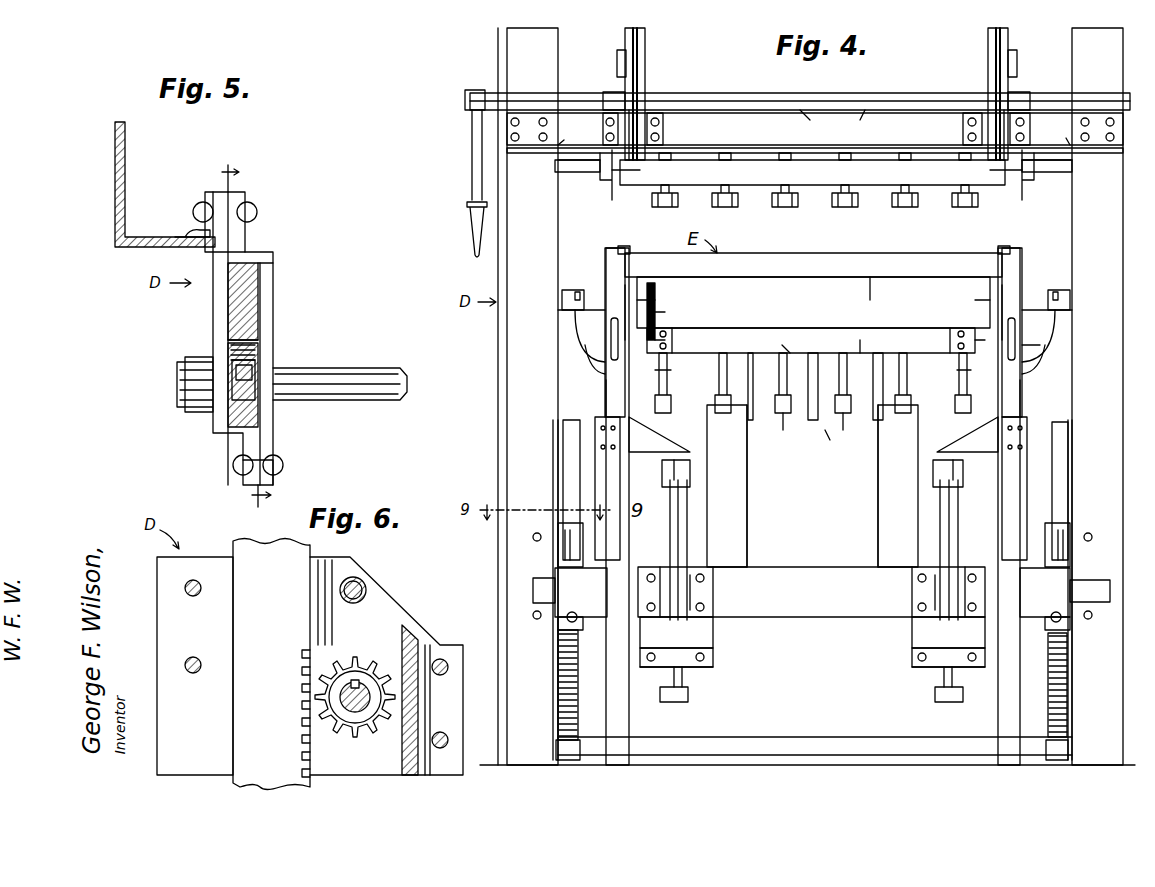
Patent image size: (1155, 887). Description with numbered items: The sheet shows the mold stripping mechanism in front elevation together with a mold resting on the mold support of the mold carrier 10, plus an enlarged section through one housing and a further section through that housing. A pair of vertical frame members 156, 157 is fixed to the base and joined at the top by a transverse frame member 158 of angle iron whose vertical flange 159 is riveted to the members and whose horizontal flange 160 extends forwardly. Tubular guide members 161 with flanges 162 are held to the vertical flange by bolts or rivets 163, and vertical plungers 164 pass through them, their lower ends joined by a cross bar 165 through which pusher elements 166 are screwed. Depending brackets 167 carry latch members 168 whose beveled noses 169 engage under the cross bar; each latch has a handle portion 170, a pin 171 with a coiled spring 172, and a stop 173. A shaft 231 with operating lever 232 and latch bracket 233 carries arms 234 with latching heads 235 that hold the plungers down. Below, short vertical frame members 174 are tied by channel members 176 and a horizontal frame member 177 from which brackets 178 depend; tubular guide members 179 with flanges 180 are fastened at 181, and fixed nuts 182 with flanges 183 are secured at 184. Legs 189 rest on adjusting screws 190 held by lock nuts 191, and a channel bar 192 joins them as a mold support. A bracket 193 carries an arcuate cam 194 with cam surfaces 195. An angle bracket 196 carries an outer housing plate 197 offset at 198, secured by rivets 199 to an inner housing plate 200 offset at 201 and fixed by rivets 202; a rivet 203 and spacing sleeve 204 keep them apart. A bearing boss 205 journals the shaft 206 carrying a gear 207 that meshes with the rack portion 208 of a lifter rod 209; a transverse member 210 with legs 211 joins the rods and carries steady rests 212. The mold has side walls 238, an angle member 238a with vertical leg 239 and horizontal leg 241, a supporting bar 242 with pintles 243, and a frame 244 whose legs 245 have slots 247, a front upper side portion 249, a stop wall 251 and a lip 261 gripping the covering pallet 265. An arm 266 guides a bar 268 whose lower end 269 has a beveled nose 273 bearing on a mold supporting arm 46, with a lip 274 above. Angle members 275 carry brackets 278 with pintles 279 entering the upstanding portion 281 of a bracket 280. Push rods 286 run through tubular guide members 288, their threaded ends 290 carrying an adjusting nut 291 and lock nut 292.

In FIG. 5, the mold carrier 10 is at (244, 338).
In FIG. 4, the mold supporting arms 46 is at (848, 340).
In FIG. 4, the vertical frame member 156 is at (505, 356).
In FIG. 5, the vertical frame member 156 is at (115, 184).
In FIG. 4, the vertical frame member 157 is at (1072, 217).
In FIG. 4, the transverse frame member 158 is at (826, 100).
In FIG. 4, the vertical flange 159 is at (888, 100).
In FIG. 4, the horizontal flange 160 is at (885, 140).
In FIG. 4, the guide members 161 is at (645, 110).
In FIG. 4, the flanges 162 is at (664, 128).
In FIG. 4, the bolts or rivets 163 is at (603, 127).
In FIG. 4, the vertical plungers 164 is at (646, 34).
In FIG. 4, the cross bar 165 is at (748, 170).
In FIG. 4, the pusher elements 166 is at (785, 207).
In FIG. 4, the depending brackets 167 is at (570, 172).
In FIG. 4, the latch members 168 is at (610, 190).
In FIG. 4, the beveled noses 169 is at (618, 190).
In FIG. 4, the handle portion 170 is at (555, 180).
In FIG. 4, the pin 171 is at (555, 140).
In FIG. 4, the coiled spring 172 is at (555, 166).
In FIG. 4, the stop 173 is at (625, 155).
In FIG. 4, the short vertical frame members 174 is at (625, 770).
In FIG. 4, the horizontal channel members 176 is at (675, 560).
In FIG. 4, the horizontal frame member 177 is at (815, 575).
In FIG. 4, the brackets 178 is at (713, 632).
In FIG. 4, the tubular guide members 179 is at (700, 586).
In FIG. 4, the flanges 180 is at (712, 600).
In FIG. 4, the fastening means 181 is at (700, 575).
In FIG. 4, the threaded fixed nuts 182 is at (713, 665).
In FIG. 4, the flanges 183 is at (713, 658).
In FIG. 4, the securing means 184 is at (651, 662).
In FIG. 4, the leg 189 is at (670, 525).
In FIG. 4, the adjusting screws 190 is at (690, 700).
In FIG. 4, the lock nuts 191 is at (690, 680).
In FIG. 4, the channel bar 192 is at (670, 475).
In FIG. 4, the bracket 193 is at (563, 490).
In FIG. 4, the arcuate cam 194 is at (655, 458).
In FIG. 4, the cam surfaces 195 is at (560, 412).
In FIG. 5, the angle bracket 196 is at (200, 235).
In FIG. 4, the outer housing plate 197 is at (560, 547).
In FIG. 5, the outer housing plate 197 is at (213, 319).
In FIG. 4, the offset 198 is at (570, 624).
In FIG. 5, the offset 198 is at (245, 485).
In FIG. 4, the rivets or bolts 199 is at (565, 617).
In FIG. 5, the rivets or bolts 199 is at (235, 470).
In FIG. 4, the inner housing plate 200 is at (560, 525).
In FIG. 5, the inner housing plate 200 is at (273, 326).
In FIG. 6, the inner housing plate 200 is at (352, 565).
In FIG. 5, the offset 201 is at (240, 239).
In FIG. 6, the offset 201 is at (160, 565).
In FIG. 5, the rivets 202 is at (257, 212).
In FIG. 6, the rivets 202 is at (185, 663).
In FIG. 4, the rivet 203 is at (532, 537).
In FIG. 5, the rivet 203 is at (252, 378).
In FIG. 6, the rivet 203 is at (366, 590).
In FIG. 4, the spacing sleeve 204 is at (558, 575).
In FIG. 5, the spacing sleeve 204 is at (255, 372).
In FIG. 6, the spacing sleeve 204 is at (362, 595).
In FIG. 4, the bearing boss 205 is at (533, 598).
In FIG. 5, the bearing boss 205 is at (195, 420).
In FIG. 4, the shaft 206 is at (533, 590).
In FIG. 5, the shaft 206 is at (368, 368).
In FIG. 6, the shaft 206 is at (340, 703).
In FIG. 5, the gear 207 is at (258, 432).
In FIG. 6, the gear 207 is at (375, 655).
In FIG. 4, the rack portion 208 is at (558, 700).
In FIG. 5, the rack portion 208 is at (228, 342).
In FIG. 6, the rack portion 208 is at (318, 668).
In FIG. 4, the lifter rod 209 is at (563, 470).
In FIG. 5, the lifter rod 209 is at (258, 300).
In FIG. 6, the lifter rod 209 is at (233, 618).
In FIG. 4, the transverse member 210 is at (840, 750).
In FIG. 4, the legs 211 is at (580, 758).
In FIG. 4, the steady rests 212 is at (747, 504).
In FIG. 4, the shaft 231 is at (780, 100).
In FIG. 4, the operating lever 232 is at (470, 125).
In FIG. 4, the latch bracket 233 is at (470, 152).
In FIG. 4, the arms 234 is at (614, 92).
In FIG. 4, the latching head 235 is at (640, 55).
In FIG. 4, the side walls 238 is at (805, 300).
In FIG. 4, the angle member 238a is at (655, 305).
In FIG. 4, the vertical leg 239 is at (660, 318).
In FIG. 4, the horizontal leg 241 is at (650, 300).
In FIG. 4, the supporting bar 242 is at (665, 340).
In FIG. 4, the pintle 243 is at (608, 332).
In FIG. 4, the frame 244 is at (604, 285).
In FIG. 4, the vertical legs 245 is at (606, 392).
In FIG. 4, the slots 247 is at (575, 345).
In FIG. 4, the front upper side portion 249 is at (605, 266).
In FIG. 4, the stop wall 251 is at (650, 258).
In FIG. 4, the lip 261 is at (634, 248).
In FIG. 4, the covering pallet 265 is at (892, 262).
In FIG. 4, the arm 266 is at (558, 312).
In FIG. 4, the bar 268 is at (562, 298).
In FIG. 4, the lower end 269 is at (590, 372).
In FIG. 4, the beveled nose 273 is at (688, 382).
In FIG. 4, the lip 274 is at (1075, 262).
In FIG. 4, the angle member 275 is at (882, 335).
In FIG. 4, the brackets 278 is at (760, 335).
In FIG. 4, the pintles 279 is at (955, 380).
In FIG. 4, the bracket 280 is at (1040, 346).
In FIG. 4, the upstanding portion 281 is at (720, 352).
In FIG. 4, the push rod 286 is at (843, 415).
In FIG. 4, the tubular guide member 288 is at (775, 350).
In FIG. 4, the threaded end 290 is at (783, 418).
In FIG. 4, the adjusting nut 291 is at (826, 440).
In FIG. 4, the lock nut 292 is at (690, 398).